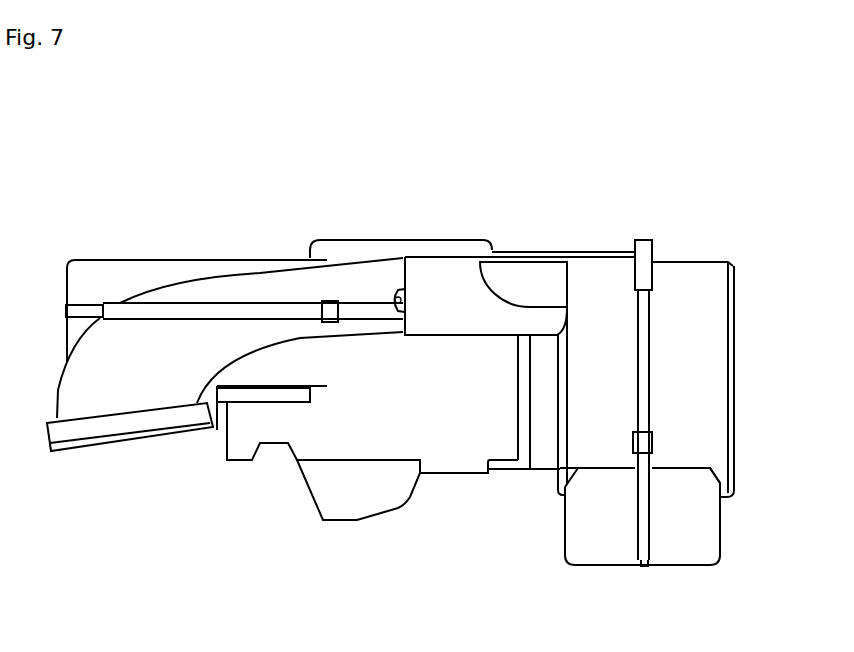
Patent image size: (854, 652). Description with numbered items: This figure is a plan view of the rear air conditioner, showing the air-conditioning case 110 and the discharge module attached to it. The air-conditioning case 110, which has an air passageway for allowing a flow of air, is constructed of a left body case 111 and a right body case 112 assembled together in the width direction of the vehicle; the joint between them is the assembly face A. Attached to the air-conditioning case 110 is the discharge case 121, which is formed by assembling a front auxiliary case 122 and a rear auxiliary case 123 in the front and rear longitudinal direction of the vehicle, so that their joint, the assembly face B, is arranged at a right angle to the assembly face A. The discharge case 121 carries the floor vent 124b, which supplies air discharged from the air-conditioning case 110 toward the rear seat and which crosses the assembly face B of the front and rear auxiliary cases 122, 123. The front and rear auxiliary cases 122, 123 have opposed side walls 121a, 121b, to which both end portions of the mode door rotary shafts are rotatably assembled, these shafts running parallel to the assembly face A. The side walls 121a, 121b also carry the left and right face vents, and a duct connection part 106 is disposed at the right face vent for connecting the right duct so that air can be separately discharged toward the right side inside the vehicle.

The duct connection part 106 is at (107, 390).
The air-conditioning case 110 is at (347, 174).
The left body case 111 is at (350, 393).
The right body case 112 is at (352, 253).
The discharge case 121 is at (687, 161).
The side wall 121a is at (738, 463).
The side wall 121b is at (558, 413).
The front auxiliary case 122 is at (688, 337).
The rear auxiliary case 123 is at (607, 335).
The floor vent 124b is at (612, 552).
The assembly face A is at (176, 322).
The assembly face B is at (650, 423).